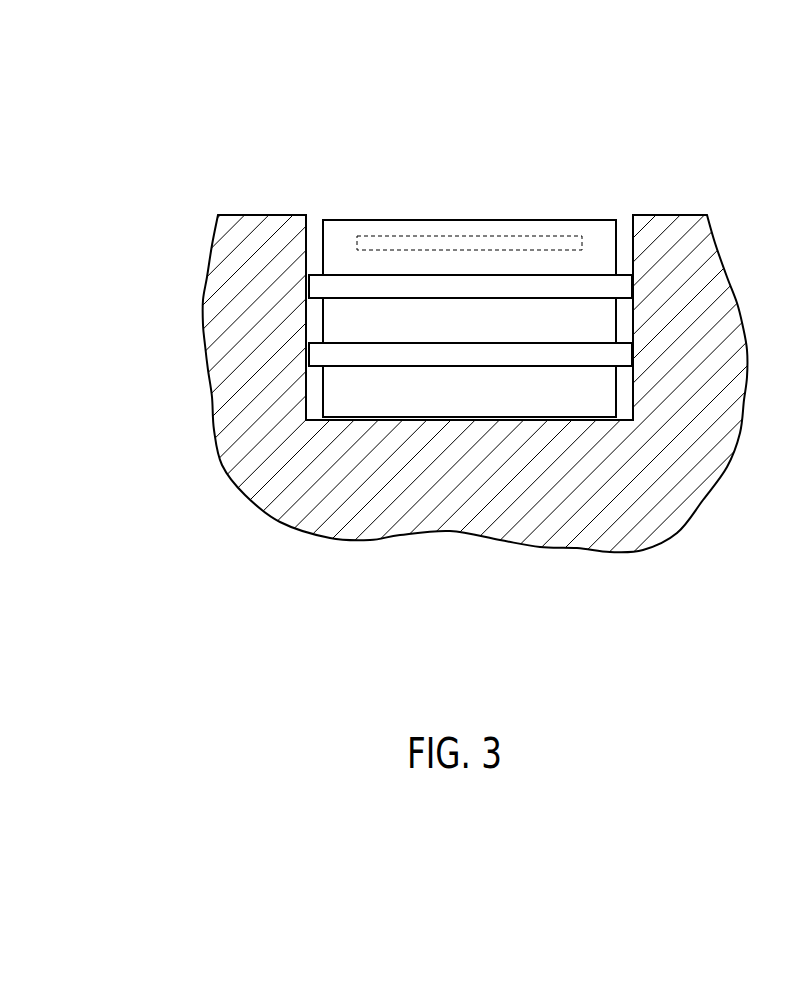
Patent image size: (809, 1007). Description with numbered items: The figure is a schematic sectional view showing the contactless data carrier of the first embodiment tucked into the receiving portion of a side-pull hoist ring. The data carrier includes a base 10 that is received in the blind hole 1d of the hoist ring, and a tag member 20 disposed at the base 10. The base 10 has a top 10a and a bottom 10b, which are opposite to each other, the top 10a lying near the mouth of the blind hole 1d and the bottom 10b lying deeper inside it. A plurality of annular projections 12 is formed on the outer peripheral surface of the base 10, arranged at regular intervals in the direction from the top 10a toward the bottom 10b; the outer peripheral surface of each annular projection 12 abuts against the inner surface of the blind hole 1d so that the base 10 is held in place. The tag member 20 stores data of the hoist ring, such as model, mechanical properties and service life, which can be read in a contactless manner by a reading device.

The blind hole 1d is at (635, 402).
The base 10 is at (349, 227).
The top 10a is at (433, 217).
The bottom 10b is at (450, 417).
The annular projections 12 is at (320, 287).
The tag member 20 is at (578, 232).